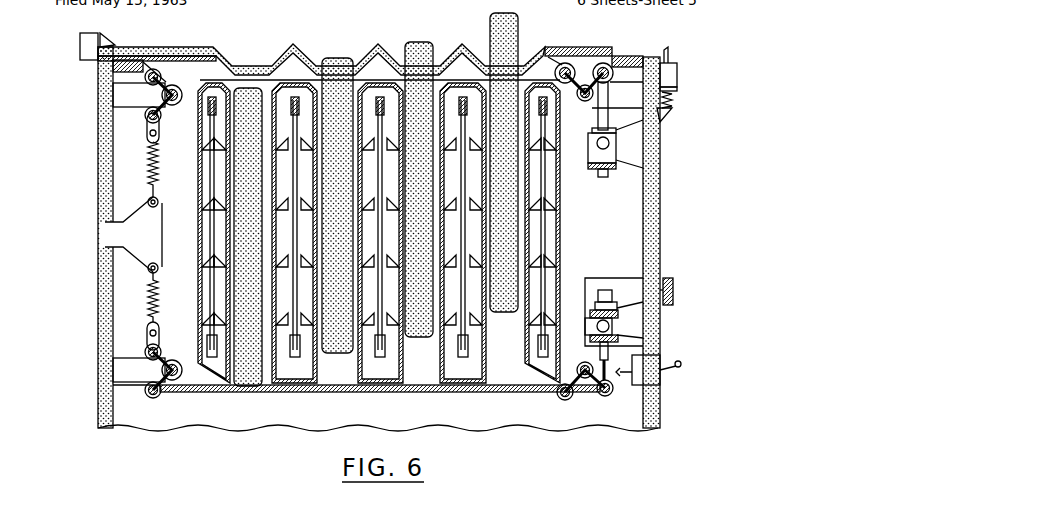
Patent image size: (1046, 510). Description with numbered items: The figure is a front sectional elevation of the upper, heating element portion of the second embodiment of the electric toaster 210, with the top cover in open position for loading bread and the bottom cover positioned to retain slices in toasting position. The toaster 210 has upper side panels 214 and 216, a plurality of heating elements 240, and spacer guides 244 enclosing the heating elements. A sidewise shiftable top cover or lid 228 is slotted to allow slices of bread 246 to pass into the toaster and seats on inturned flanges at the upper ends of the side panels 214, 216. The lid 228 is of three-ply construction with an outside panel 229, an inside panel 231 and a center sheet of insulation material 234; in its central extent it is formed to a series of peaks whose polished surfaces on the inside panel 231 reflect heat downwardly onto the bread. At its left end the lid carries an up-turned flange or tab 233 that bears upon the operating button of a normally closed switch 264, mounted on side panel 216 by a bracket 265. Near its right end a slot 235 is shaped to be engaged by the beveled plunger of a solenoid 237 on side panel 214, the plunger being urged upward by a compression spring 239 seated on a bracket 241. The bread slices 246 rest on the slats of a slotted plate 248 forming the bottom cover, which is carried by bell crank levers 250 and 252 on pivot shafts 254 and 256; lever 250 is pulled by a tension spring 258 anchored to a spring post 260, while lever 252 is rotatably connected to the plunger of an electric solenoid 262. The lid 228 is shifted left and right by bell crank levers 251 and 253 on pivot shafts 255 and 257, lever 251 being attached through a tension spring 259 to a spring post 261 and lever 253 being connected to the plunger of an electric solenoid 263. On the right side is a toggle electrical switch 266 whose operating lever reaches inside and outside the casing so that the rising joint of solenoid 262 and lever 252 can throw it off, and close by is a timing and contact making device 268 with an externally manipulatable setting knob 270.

The electric toaster 210 is at (92, 160).
The upper side panel 214 is at (660, 227).
The upper side panel 216 is at (100, 203).
The top cover or lid 228 is at (162, 48).
The outside panel 229 is at (527, 62).
The inside panel 231 is at (392, 56).
The up-turned flange or tab 233 is at (104, 46).
The center sheet of insulation material 234 is at (381, 68).
The slot 235 is at (620, 54).
The solenoid 237 is at (677, 73).
The compression spring 239 is at (675, 100).
The heating elements 240 is at (213, 90).
The bracket 241 is at (670, 115).
The spacer guides 244 is at (296, 95).
The slices of bread 246 is at (441, 42).
The slotted plate 248 is at (270, 396).
The bell crank lever 250 is at (180, 378).
The bell crank lever 251 is at (163, 100).
The bell crank lever 252 is at (580, 388).
The bell crank lever 253 is at (572, 64).
The pivot shaft 254 is at (160, 374).
The pivot shaft 255 is at (172, 105).
The pivot shaft 256 is at (589, 384).
The pivot shaft 257 is at (577, 98).
The tension spring 258 is at (160, 310).
The tension spring 259 is at (157, 160).
The spring post 260 is at (172, 263).
The spring post 261 is at (159, 200).
The electric solenoid 262 is at (593, 295).
The electric solenoid 263 is at (612, 163).
The switch 264 is at (80, 47).
The bracket 265 is at (97, 70).
The electrical switch 266 is at (665, 356).
The timing and electrical contact making device 268 is at (587, 272).
The timing adjustment knob 270 is at (670, 287).